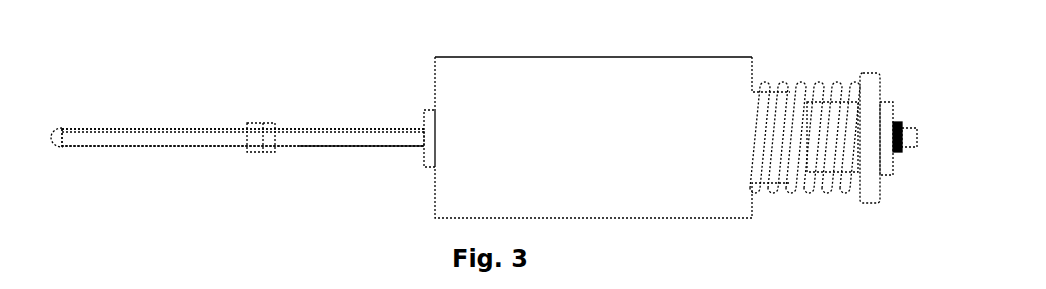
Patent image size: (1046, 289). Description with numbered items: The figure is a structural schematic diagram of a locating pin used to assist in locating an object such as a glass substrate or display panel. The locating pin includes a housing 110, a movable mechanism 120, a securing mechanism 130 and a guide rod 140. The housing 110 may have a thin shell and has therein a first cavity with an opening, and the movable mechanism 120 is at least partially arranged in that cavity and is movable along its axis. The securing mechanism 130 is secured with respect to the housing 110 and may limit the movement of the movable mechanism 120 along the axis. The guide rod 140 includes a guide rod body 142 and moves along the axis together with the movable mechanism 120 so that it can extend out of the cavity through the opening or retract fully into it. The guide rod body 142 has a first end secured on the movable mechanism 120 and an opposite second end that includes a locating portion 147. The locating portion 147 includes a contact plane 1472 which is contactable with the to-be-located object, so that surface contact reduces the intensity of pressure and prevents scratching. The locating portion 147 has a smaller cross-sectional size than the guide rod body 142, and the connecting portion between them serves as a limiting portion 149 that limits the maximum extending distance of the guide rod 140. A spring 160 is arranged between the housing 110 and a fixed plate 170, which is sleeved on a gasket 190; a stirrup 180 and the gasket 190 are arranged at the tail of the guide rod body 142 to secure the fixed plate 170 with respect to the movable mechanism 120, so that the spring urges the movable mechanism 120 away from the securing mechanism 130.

The housing 110 is at (562, 73).
The movable mechanism 120 is at (843, 105).
The securing mechanism 130 is at (433, 113).
The guide rod 140 is at (317, 137).
The guide rod body 142 is at (342, 138).
The locating portion 147 is at (155, 135).
The contact plane 1472 is at (55, 138).
The limiting portion 149 is at (258, 125).
The spring 160 is at (765, 112).
The fixed plate 170 is at (875, 102).
The stirrup 180 is at (899, 121).
The gasket 190 is at (888, 112).